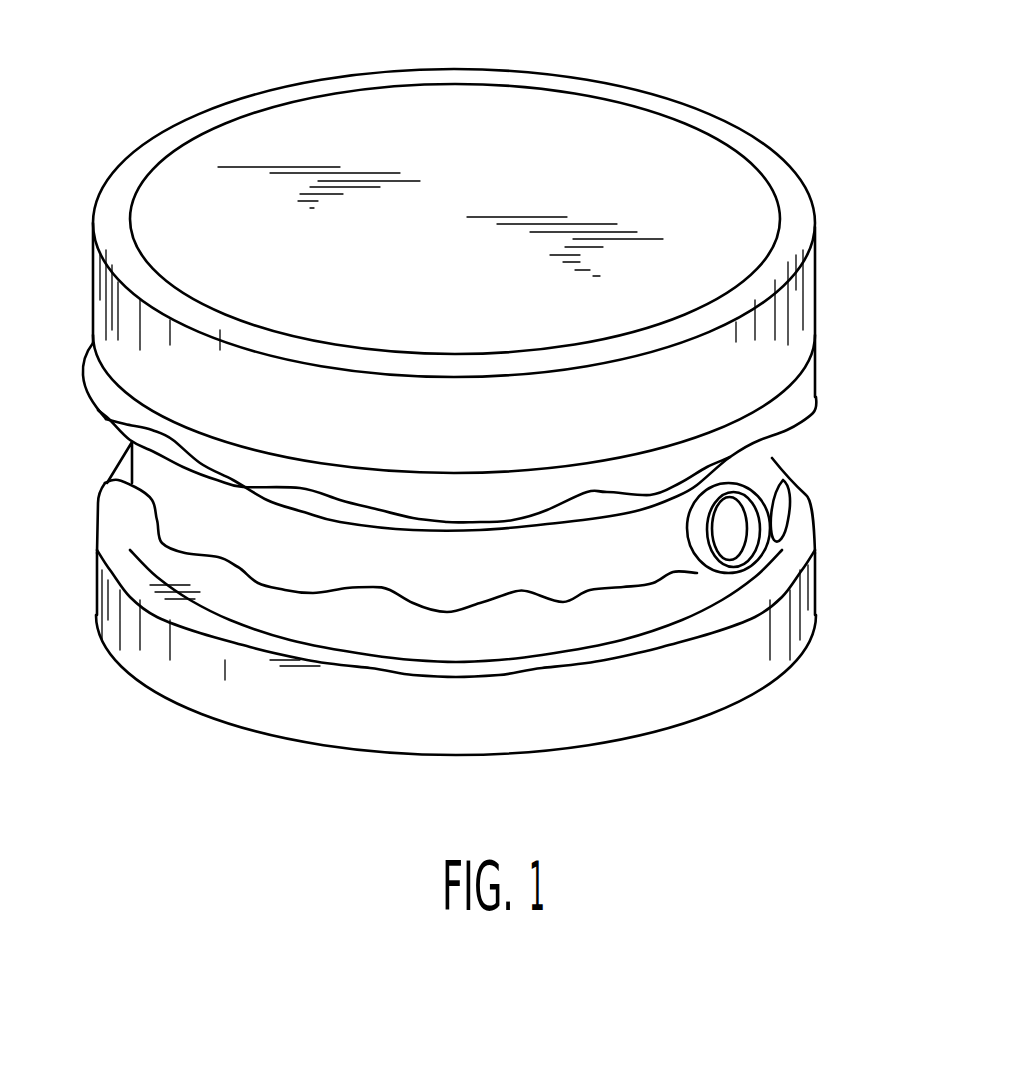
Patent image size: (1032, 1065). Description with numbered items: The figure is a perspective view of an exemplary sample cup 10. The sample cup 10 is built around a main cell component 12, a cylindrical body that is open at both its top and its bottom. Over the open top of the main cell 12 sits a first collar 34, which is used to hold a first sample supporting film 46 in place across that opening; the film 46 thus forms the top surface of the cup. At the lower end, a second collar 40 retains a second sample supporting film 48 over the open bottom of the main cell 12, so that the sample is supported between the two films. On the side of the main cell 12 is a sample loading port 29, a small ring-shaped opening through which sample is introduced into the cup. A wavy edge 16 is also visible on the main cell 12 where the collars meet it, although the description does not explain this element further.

The sample cup 10 is at (826, 192).
The main cell component 12 is at (778, 468).
The wavy skirt edge 16 is at (133, 433).
The sample loading port 29 is at (753, 527).
The first collar 34 is at (105, 307).
The second collar 40 is at (765, 648).
The first sample supporting film 46 is at (556, 121).
The second sample supporting film 48 is at (155, 556).